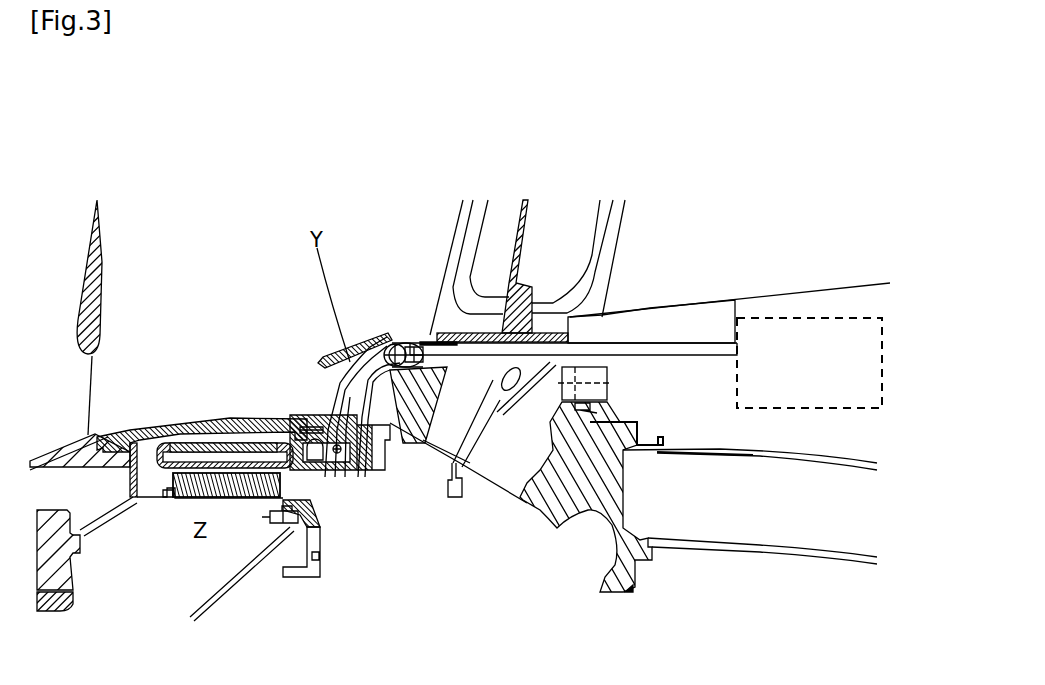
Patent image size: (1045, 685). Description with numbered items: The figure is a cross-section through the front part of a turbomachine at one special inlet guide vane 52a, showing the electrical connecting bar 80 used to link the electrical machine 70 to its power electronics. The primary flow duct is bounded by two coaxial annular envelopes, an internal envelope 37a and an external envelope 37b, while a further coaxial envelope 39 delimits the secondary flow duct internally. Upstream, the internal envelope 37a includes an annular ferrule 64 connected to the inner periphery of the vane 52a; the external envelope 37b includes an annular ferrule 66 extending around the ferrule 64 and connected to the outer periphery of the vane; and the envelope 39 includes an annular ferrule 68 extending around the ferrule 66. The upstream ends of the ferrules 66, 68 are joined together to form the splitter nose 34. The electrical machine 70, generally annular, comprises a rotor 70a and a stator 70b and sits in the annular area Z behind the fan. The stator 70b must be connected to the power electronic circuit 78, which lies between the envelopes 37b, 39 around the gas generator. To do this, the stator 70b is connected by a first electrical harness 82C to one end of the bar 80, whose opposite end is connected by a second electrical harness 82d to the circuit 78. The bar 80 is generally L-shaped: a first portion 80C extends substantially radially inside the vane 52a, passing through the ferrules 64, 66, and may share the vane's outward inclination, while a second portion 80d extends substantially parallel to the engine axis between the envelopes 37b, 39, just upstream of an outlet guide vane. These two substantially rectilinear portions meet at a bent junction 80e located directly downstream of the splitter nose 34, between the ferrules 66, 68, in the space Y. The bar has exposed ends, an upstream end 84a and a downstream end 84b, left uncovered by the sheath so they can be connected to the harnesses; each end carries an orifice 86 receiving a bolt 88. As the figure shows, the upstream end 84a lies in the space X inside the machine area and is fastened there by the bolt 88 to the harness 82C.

The splitter nose 34 is at (320, 362).
The internal annular envelope 37a is at (522, 522).
The external annular envelope 37b is at (652, 436).
The annular envelope 39 is at (648, 306).
The special IGV 52a is at (380, 412).
The annular ferrule 64 is at (235, 422).
The annular ferrule 66 is at (395, 355).
The annular ferrule 68 is at (392, 350).
The electrical machine 70 is at (142, 418).
The rotor 70a is at (234, 500).
The stator 70b is at (205, 427).
The power electronic circuit 78 is at (884, 322).
The electrical connecting bar 80 is at (310, 340).
The first portion of the bar 80C is at (335, 395).
The second portion of the bar 80d is at (393, 337).
The bent junction 80e is at (378, 362).
The first electrical harness 82C is at (305, 415).
The second electrical harness 82d is at (600, 344).
The upstream end of the bar 84a is at (292, 560).
The downstream end of the bar 84b is at (404, 345).
The orifice 86 is at (345, 500).
The bolt 88 is at (336, 561).